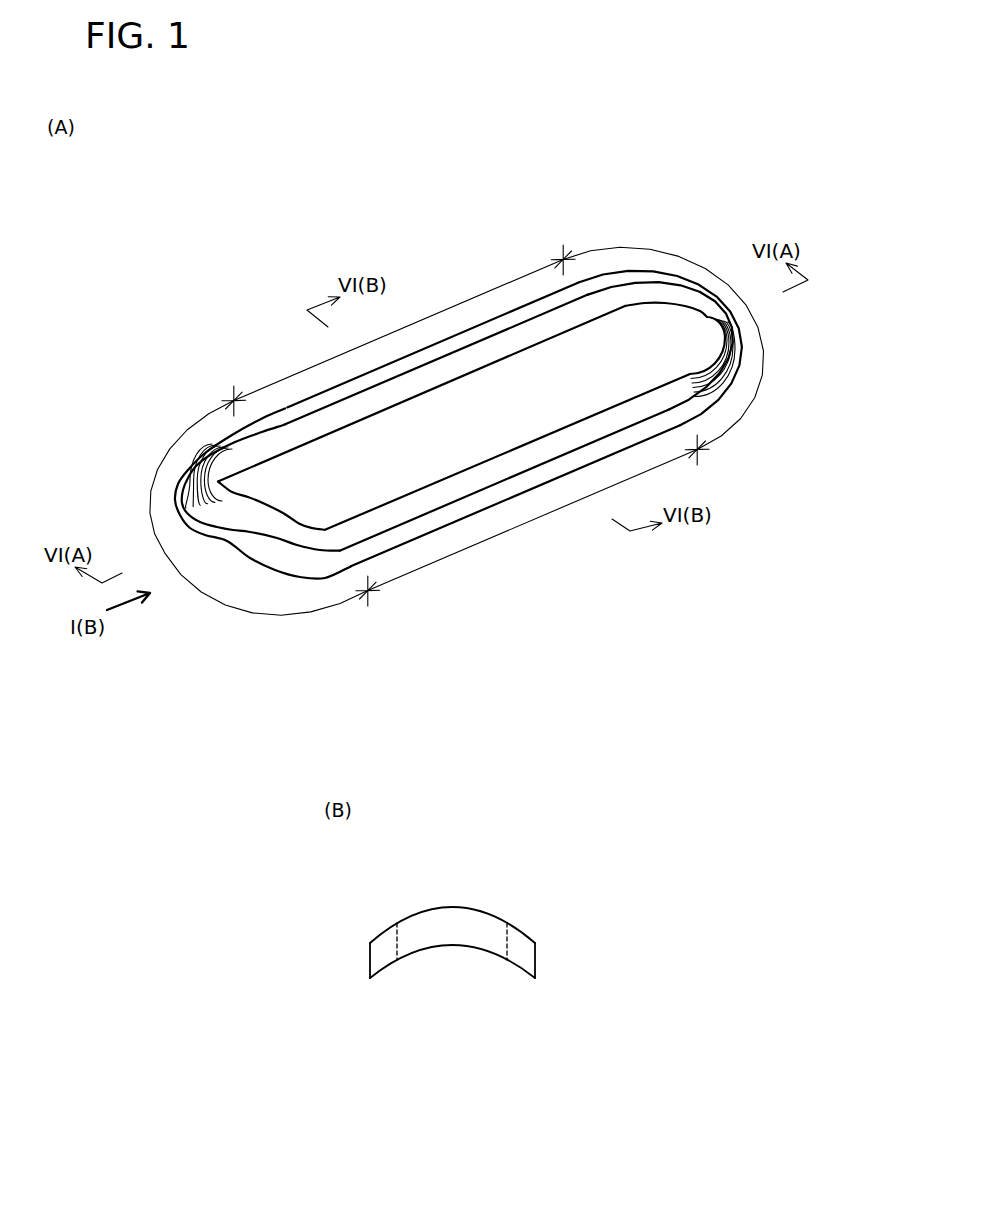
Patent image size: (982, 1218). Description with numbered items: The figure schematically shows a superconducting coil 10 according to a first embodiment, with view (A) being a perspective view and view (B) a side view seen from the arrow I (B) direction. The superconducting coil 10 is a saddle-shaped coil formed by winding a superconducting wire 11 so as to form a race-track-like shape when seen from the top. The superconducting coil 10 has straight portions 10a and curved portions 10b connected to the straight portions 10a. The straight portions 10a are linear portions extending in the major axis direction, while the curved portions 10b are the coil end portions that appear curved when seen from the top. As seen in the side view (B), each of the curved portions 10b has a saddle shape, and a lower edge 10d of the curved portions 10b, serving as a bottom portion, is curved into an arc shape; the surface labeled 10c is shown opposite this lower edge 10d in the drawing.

The superconducting coil 10 is at (739, 193).
The straight portions 10a is at (482, 424).
The curved portions 10b is at (462, 440).
The outer peripheral surface 10c is at (265, 518).
The lower edge 10d is at (227, 546).
The superconducting wire 11 is at (192, 464).